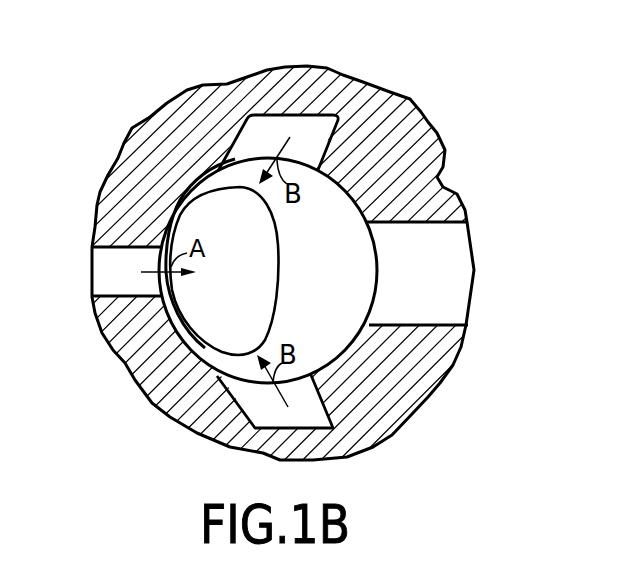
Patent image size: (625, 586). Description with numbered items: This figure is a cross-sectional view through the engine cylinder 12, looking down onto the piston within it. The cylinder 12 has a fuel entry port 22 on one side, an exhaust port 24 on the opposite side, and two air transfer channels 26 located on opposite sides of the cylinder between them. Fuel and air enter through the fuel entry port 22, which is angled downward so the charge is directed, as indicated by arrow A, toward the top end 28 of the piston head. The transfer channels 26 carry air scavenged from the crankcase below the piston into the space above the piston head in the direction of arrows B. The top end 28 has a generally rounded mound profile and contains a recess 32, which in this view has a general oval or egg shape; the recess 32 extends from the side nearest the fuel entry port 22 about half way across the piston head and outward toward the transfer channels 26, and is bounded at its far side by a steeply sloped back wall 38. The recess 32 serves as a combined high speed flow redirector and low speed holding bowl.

The cylinder 12 is at (398, 100).
The fuel entry port 22 is at (92, 278).
The exhaust port 24 is at (460, 283).
The air transfer channels 26 is at (306, 123).
The top end of the piston head 28 is at (339, 257).
The recess 32 is at (186, 322).
The back wall 38 is at (270, 270).